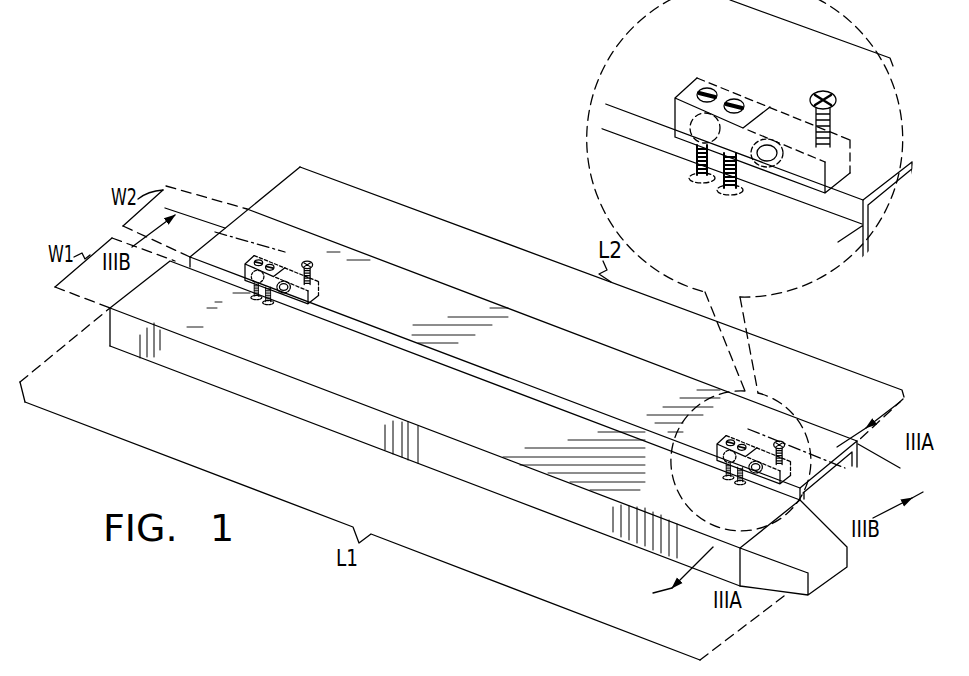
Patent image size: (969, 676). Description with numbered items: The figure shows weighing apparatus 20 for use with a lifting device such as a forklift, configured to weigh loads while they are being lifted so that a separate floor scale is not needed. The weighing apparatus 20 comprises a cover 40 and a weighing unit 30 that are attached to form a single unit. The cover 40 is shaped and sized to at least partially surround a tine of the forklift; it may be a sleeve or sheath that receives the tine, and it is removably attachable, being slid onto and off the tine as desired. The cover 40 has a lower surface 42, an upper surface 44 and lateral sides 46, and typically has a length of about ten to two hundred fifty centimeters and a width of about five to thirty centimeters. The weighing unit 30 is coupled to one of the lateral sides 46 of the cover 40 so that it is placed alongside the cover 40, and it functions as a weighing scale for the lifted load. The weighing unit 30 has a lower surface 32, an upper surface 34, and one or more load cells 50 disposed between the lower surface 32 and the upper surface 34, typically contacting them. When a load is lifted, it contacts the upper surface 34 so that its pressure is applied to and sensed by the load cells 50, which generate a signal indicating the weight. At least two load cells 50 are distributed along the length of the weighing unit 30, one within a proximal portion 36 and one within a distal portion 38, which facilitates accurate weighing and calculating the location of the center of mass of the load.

The weighing apparatus 20 is at (322, 150).
The weighing unit 30 is at (500, 296).
The lower surface 32 is at (838, 496).
The upper surface 34 is at (775, 417).
The proximal portion 36 is at (258, 206).
The distal portion 38 is at (692, 375).
The cover 40 is at (280, 437).
The lower surface 42 is at (368, 447).
The upper surface 44 is at (268, 360).
The lateral sides 46 is at (178, 262).
The load cells 50 is at (765, 82).